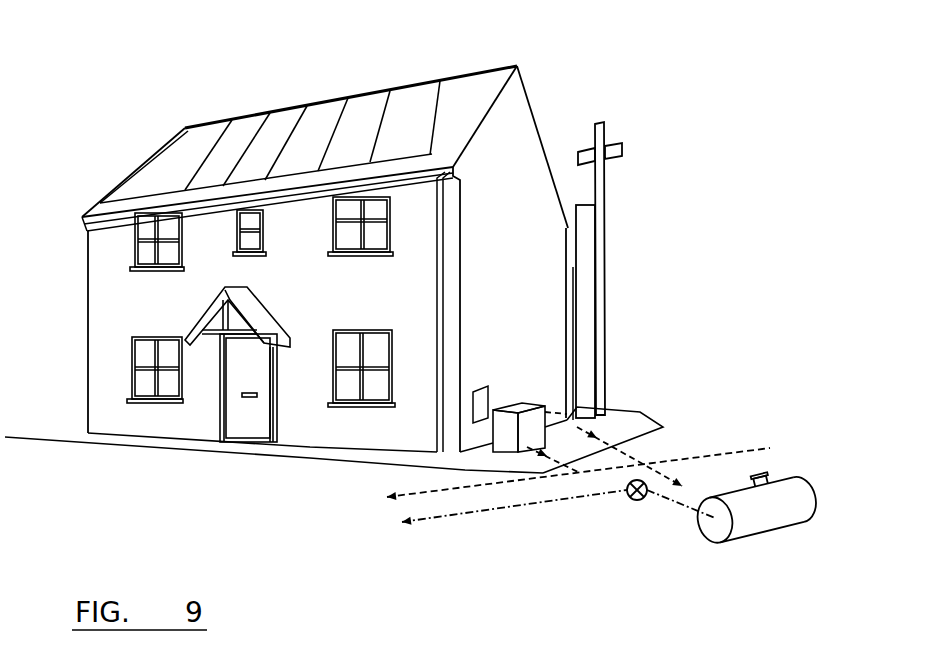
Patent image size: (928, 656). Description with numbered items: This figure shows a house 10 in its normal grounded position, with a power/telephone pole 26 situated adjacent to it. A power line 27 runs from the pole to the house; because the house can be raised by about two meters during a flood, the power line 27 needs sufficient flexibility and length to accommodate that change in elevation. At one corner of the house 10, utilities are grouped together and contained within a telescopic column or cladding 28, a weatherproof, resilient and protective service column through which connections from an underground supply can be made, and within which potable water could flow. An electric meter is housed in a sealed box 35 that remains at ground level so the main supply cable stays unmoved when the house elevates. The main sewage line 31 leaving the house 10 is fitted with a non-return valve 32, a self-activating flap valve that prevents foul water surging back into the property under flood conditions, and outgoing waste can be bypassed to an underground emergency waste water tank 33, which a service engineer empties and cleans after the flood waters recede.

The house 10 is at (122, 155).
The power/telephone pole 26 is at (600, 290).
The power line 27 is at (578, 235).
The telescopic column or cladding 28 is at (577, 360).
The main sewage line 31 is at (507, 510).
The non-return valve 32 is at (635, 502).
The emergency waste water tank 33 is at (712, 528).
The sealed box 35 is at (500, 433).